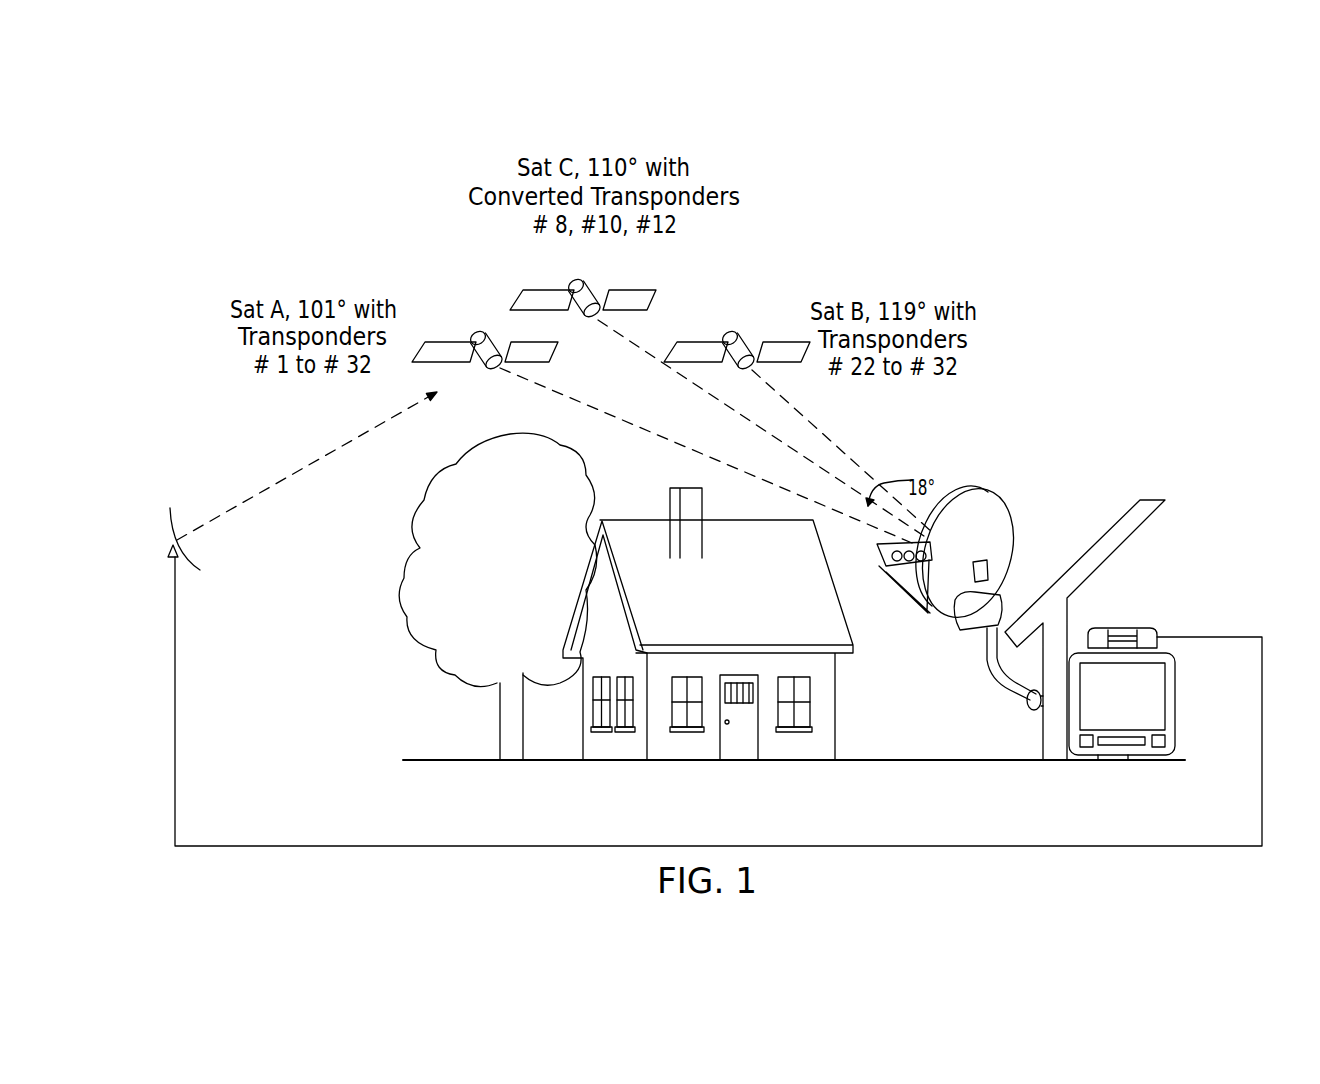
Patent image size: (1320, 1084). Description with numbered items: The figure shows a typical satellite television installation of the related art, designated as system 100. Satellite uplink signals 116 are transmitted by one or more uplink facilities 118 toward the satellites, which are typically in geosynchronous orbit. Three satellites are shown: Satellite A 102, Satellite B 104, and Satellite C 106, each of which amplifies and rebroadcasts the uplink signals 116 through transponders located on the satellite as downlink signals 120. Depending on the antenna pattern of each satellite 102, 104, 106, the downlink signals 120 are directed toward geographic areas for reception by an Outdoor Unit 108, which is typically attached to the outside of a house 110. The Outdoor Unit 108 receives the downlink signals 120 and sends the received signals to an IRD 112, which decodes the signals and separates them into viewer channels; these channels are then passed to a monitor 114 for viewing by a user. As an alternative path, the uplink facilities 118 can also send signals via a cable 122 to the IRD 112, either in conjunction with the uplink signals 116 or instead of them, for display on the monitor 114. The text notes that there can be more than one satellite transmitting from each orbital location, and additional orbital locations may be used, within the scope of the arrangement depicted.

The system 100 is at (918, 158).
The Satellite A 102 is at (450, 330).
The Satellite B 104 is at (745, 325).
The Satellite C 106 is at (660, 277).
The Outdoor Unit (ODU) 108 is at (973, 492).
The house 110 is at (1108, 525).
The IRD 112 is at (1130, 628).
The monitor 114 is at (1178, 697).
The satellite uplink signals 116 is at (268, 485).
The uplink facilities 118 is at (173, 545).
The downlink signals 120 is at (878, 480).
The cable 122 is at (1233, 637).